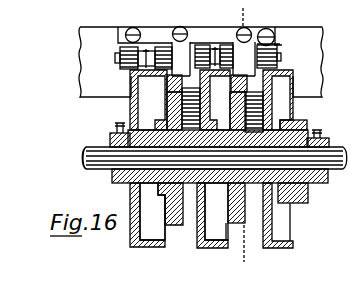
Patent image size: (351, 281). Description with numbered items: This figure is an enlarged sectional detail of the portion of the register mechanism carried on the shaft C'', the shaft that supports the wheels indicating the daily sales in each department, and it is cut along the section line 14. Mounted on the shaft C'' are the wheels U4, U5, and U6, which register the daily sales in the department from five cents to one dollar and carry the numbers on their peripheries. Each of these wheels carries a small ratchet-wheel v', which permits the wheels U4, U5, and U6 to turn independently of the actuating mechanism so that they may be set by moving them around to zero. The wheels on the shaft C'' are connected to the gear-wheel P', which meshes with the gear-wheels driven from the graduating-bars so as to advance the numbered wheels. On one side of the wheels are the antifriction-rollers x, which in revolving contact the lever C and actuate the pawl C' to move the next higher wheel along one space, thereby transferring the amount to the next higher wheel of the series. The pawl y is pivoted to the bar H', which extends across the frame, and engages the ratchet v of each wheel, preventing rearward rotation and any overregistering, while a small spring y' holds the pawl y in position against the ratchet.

The bar H' is at (201, 62).
The shaft C'' is at (199, 158).
The stem C is at (213, 59).
The shaft C' is at (209, 76).
The small spring y' is at (133, 50).
The pawl y is at (155, 50).
The antifriction-roller x is at (200, 104).
The wheel U4 is at (146, 247).
The wheel U5 is at (215, 248).
The wheel U6 is at (284, 248).
The ratchet v is at (208, 211).
The small ratchet-wheel v' is at (184, 211).
The gear-wheel P' is at (300, 204).
The section line 14 is at (258, 3).